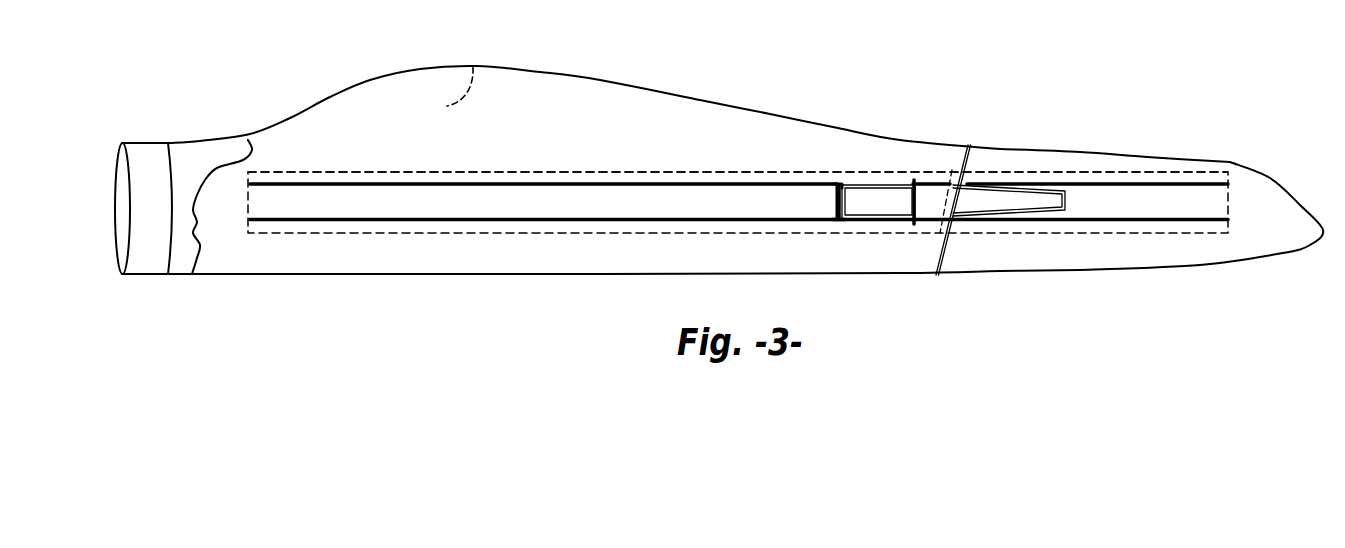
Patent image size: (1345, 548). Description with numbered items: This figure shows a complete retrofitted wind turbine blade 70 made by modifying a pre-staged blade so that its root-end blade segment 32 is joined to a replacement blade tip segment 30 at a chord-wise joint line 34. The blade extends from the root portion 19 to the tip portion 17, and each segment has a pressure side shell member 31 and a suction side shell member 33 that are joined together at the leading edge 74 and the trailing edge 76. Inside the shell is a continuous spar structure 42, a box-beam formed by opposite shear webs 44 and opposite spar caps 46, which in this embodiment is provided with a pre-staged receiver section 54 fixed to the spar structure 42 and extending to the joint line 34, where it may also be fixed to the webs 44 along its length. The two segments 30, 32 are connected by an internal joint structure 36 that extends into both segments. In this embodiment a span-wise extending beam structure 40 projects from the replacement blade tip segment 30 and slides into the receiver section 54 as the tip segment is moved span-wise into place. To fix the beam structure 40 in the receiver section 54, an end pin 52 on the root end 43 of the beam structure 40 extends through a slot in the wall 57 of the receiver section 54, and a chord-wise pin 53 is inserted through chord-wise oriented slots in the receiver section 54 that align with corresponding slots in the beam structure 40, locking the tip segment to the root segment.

The tip portion 17 is at (1282, 223).
The root portion 19 is at (188, 209).
The replacement blade tip segment 30 is at (1150, 165).
The pressure side shell member 31 is at (539, 136).
The root-end blade segment 32 is at (618, 105).
The suction side shell member 33 is at (473, 67).
The chord-wise joint line 34 is at (938, 275).
The internal joint structure 36 is at (945, 150).
The beam structure 40 is at (1003, 183).
The spar structure 42 is at (641, 155).
The root end of beam structure 43 is at (842, 221).
The shear webs 44 is at (418, 222).
The spar caps 46 is at (348, 171).
The end pin 52 is at (836, 200).
The chord-wise pin 53 is at (903, 212).
The receiver section 54 is at (888, 185).
The wall of receiver section 57 is at (840, 186).
The retrofitted wind turbine blade 70 is at (830, 67).
The leading edge 74 is at (467, 275).
The trailing edge 76 is at (760, 115).